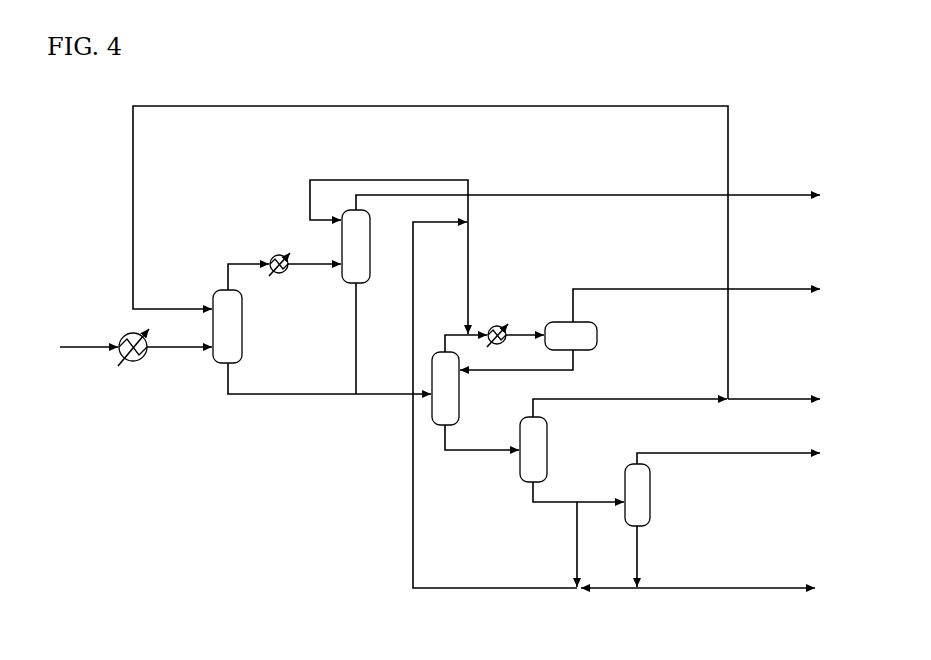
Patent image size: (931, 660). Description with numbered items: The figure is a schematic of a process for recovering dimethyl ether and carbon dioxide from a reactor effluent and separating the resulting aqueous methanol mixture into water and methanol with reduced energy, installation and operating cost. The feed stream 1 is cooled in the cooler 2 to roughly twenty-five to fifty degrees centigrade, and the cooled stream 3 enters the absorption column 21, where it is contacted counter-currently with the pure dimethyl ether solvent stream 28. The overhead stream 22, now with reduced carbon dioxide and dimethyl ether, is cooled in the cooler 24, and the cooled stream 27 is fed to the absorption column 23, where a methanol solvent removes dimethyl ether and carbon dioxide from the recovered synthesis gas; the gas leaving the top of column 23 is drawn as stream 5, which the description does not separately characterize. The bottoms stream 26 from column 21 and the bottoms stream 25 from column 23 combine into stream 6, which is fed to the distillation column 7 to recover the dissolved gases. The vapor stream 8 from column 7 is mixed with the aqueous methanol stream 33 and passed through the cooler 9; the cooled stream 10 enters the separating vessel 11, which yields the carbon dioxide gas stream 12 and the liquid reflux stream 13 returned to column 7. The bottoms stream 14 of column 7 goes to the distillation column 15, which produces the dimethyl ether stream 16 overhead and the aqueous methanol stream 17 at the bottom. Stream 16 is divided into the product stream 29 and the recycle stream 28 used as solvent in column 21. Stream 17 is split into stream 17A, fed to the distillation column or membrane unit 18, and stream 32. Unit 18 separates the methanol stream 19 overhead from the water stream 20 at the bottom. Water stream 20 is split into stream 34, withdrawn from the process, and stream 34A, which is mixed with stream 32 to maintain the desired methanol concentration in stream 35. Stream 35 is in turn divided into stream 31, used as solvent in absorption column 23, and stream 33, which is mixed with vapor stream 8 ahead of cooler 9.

The stream 1 is at (70, 345).
The cooler 2 is at (133, 351).
The cooled stream 3 is at (170, 345).
The overhead stream 5 is at (759, 194).
The stream 6 is at (377, 392).
The distillation column 7 is at (459, 406).
The vapor stream 8 is at (459, 334).
The cooler 9 is at (497, 343).
The cooled stream 10 is at (528, 334).
The separating vessel 11 is at (600, 332).
The CO2 stream 12 is at (640, 288).
The reflux stream 13 is at (500, 372).
The bottom stream 14 is at (468, 452).
The distillation column 15 is at (548, 456).
The DME stream 16 is at (647, 397).
The aqueous methanol stream 17 is at (549, 504).
The stream 17A is at (593, 500).
The distillation column 18 is at (649, 501).
The methanol stream 19 is at (708, 452).
The water stream 20 is at (639, 558).
The absorption column 21 is at (243, 325).
The stream 22 is at (243, 262).
The absorption column 23 is at (371, 255).
The cooler 24 is at (279, 272).
The stream 25 is at (357, 334).
The stream 26 is at (292, 392).
The cooled stream 27 is at (314, 268).
The stream 28 is at (518, 104).
The stream 29 is at (779, 397).
The stream 31 is at (376, 179).
The stream 32 is at (577, 532).
The stream 33 is at (469, 274).
The stream 34 is at (750, 587).
The stream 34A is at (610, 590).
The stream 35 is at (483, 587).